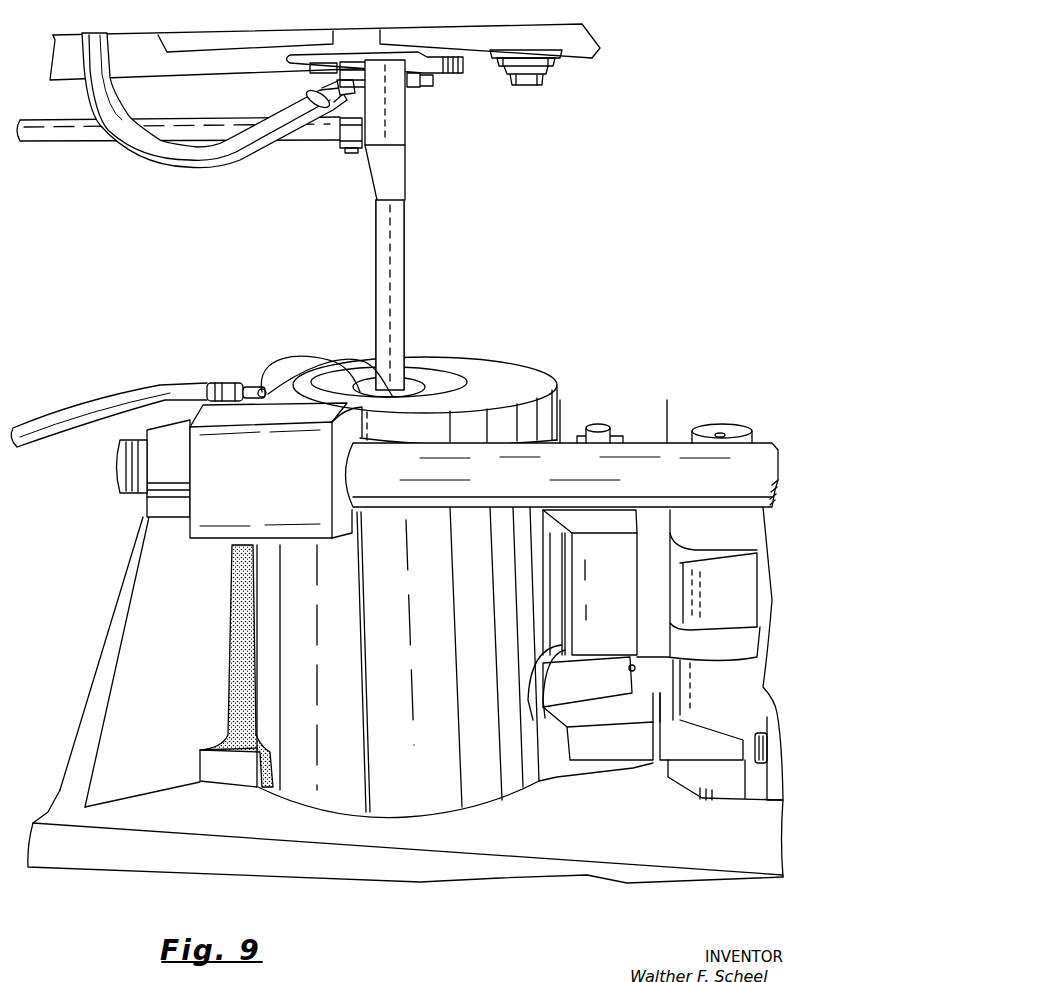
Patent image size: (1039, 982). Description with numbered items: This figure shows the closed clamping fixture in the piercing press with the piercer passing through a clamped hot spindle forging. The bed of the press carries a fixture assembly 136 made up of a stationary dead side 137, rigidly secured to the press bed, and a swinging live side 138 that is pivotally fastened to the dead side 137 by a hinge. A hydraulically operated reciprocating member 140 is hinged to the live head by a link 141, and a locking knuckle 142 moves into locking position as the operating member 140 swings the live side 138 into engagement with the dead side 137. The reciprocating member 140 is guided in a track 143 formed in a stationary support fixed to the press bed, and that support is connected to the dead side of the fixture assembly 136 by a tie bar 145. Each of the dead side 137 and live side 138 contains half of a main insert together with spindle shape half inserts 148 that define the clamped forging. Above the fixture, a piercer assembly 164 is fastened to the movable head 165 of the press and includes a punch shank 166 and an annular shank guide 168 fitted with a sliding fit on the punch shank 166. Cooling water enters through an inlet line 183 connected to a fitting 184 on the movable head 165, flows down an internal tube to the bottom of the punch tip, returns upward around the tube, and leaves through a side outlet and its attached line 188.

The fixture assembly 136 is at (435, 368).
The dead side 137 is at (305, 777).
The live side 138 is at (407, 797).
The reciprocating member 140 is at (684, 713).
The link 141 is at (630, 562).
The locking knuckle 142 is at (643, 767).
The track 143 is at (777, 713).
The tie bar 145 is at (673, 443).
The half inserts 148 is at (357, 367).
The piercer assembly 164 is at (446, 180).
The movable head 165 is at (477, 37).
The punch shank 166 is at (397, 248).
The annular shank guide 168 is at (421, 390).
The inlet line 183 is at (243, 157).
The fitting 184 is at (348, 150).
The line 188 is at (312, 133).